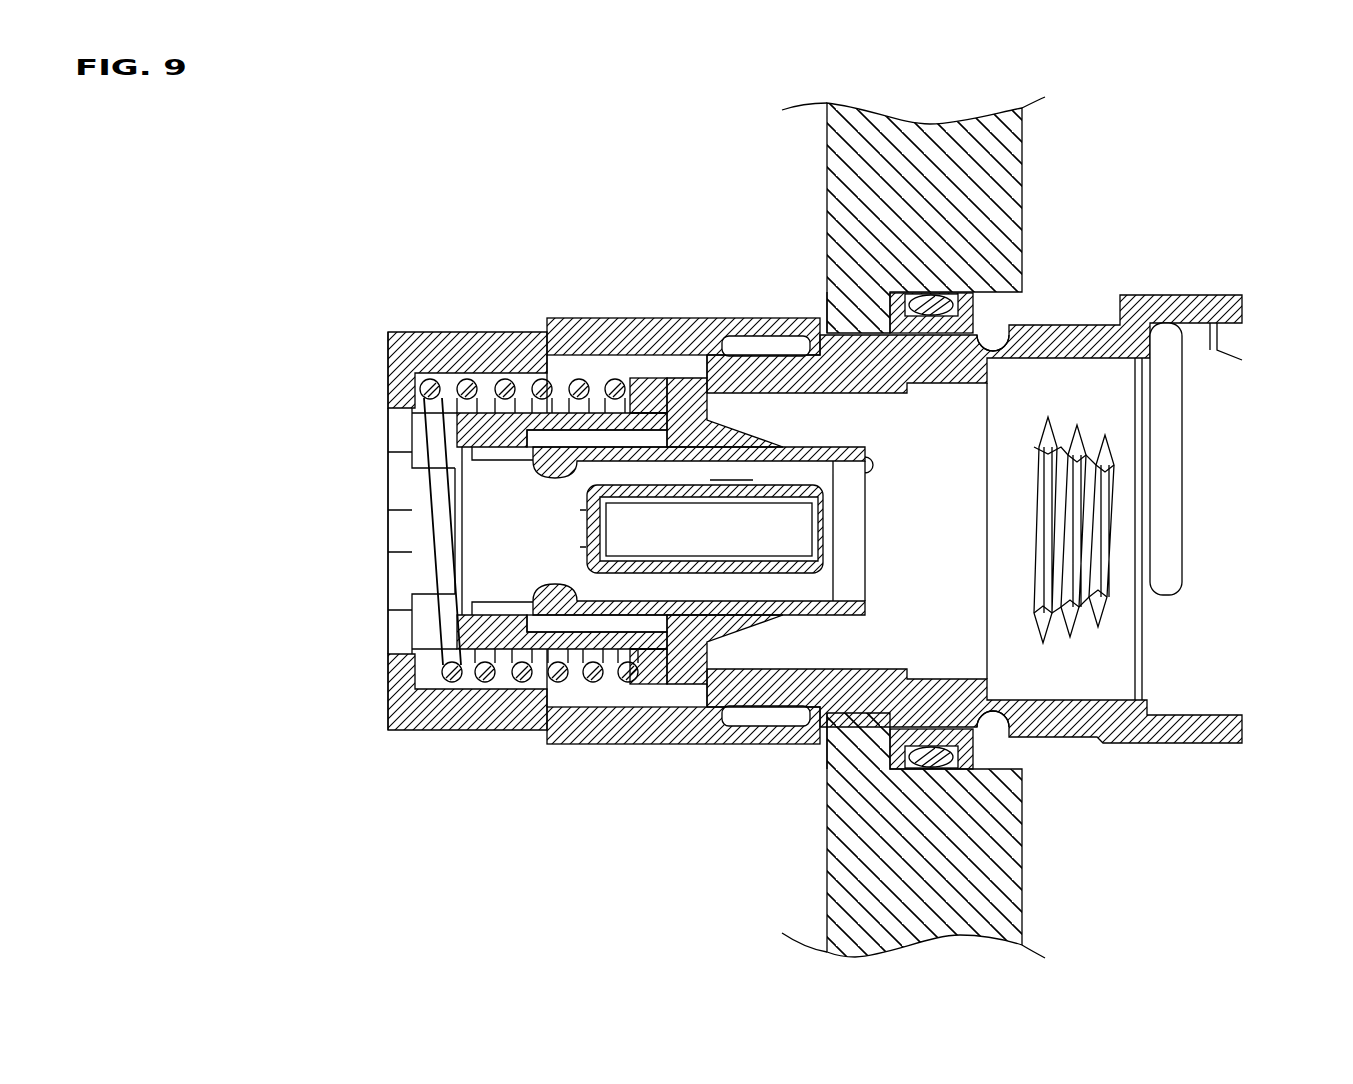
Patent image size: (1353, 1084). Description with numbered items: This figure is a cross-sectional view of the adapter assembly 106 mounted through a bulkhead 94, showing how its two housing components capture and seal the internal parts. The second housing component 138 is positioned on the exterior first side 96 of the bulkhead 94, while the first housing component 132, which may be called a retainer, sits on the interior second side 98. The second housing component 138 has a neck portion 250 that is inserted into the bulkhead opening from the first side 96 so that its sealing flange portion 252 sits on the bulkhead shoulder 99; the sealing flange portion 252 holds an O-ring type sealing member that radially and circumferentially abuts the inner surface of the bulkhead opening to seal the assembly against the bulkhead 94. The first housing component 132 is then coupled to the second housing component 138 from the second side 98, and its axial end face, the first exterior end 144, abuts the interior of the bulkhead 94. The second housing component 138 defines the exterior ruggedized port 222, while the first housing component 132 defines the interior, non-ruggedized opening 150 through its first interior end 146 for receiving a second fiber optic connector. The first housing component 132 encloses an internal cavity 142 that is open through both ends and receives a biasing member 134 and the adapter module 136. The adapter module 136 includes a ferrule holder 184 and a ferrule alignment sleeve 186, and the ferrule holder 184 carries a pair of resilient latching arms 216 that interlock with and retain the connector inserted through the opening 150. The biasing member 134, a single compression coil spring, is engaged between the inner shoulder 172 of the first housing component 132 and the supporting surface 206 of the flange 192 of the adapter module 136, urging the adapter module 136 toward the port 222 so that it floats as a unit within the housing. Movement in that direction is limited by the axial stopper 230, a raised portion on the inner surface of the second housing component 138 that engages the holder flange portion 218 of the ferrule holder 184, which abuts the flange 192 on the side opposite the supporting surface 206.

The bulkhead 94 is at (1012, 150).
The first side 96 is at (1047, 176).
The second side 98 is at (806, 166).
The bulkhead shoulder 99 is at (968, 330).
The adapter assembly 106 is at (308, 238).
The first housing component 132 is at (688, 326).
The biasing member 134 is at (547, 385).
The adapter module 136 is at (878, 446).
The second housing component 138 is at (1082, 330).
The internal cavity 142 is at (582, 368).
The first exterior end 144 is at (830, 304).
The first interior end 146 is at (380, 366).
The opening 150 is at (396, 532).
The inner shoulder 172 is at (427, 382).
The ferrule holder 184 is at (758, 478).
The ferrule alignment sleeve 186 is at (822, 506).
The flange 192 is at (643, 383).
The supporting surface 206 is at (629, 383).
The latching arms 216 is at (592, 586).
The holder flange portion 218 is at (672, 381).
The port 222 is at (1212, 510).
The axial stopper 230 is at (682, 376).
The neck portion 250 is at (823, 355).
The sealing flange portion 252 is at (968, 303).